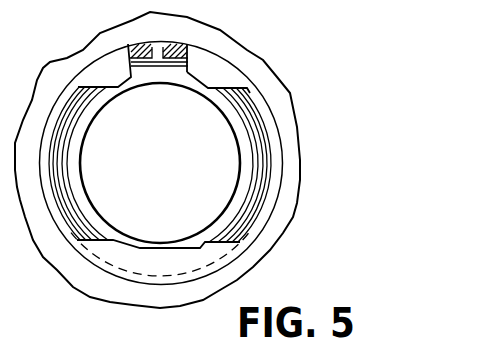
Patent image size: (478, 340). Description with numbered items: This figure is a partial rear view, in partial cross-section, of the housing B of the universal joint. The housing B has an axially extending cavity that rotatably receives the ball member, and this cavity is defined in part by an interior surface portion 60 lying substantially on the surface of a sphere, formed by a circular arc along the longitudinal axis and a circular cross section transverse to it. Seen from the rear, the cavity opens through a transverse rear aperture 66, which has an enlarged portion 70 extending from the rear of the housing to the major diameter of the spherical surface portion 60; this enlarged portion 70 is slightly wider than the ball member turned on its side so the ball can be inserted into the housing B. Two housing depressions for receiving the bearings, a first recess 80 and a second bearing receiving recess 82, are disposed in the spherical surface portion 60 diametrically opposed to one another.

The housing B is at (201, 28).
The interior surface portion 60 is at (97, 225).
The rear aperture 66 is at (240, 240).
The enlarged portion 70 is at (244, 118).
The first recess 80 is at (154, 44).
The second bearing receiving recess 82 is at (166, 280).